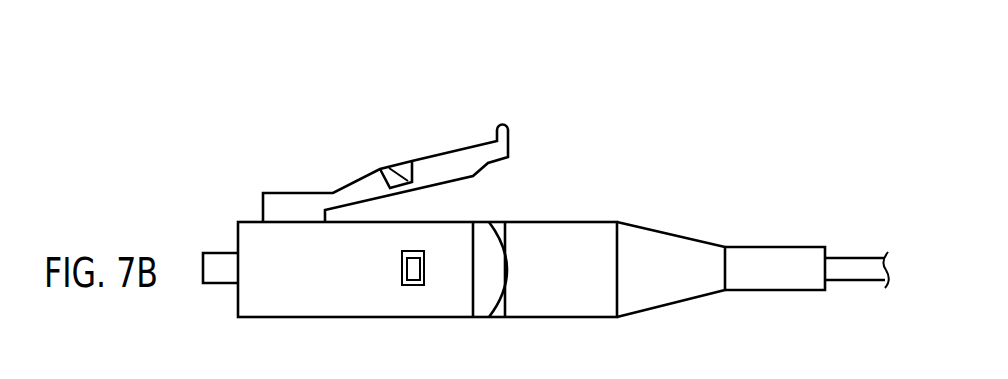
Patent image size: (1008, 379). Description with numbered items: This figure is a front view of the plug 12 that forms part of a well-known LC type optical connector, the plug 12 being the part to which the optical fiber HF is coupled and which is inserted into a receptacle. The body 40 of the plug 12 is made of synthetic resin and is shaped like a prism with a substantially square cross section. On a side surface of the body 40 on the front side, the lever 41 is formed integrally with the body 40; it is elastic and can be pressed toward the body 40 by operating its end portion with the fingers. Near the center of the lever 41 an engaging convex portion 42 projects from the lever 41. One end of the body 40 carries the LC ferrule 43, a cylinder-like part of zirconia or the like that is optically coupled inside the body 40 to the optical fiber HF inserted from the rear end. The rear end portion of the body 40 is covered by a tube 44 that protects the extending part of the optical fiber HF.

The plug 12 is at (486, 78).
The body 40 is at (317, 305).
The lever 41 is at (448, 158).
The engaging convex portion 42 is at (400, 172).
The LC ferrule 43 is at (218, 262).
The tube 44 is at (572, 235).
The optical fiber HF is at (853, 268).